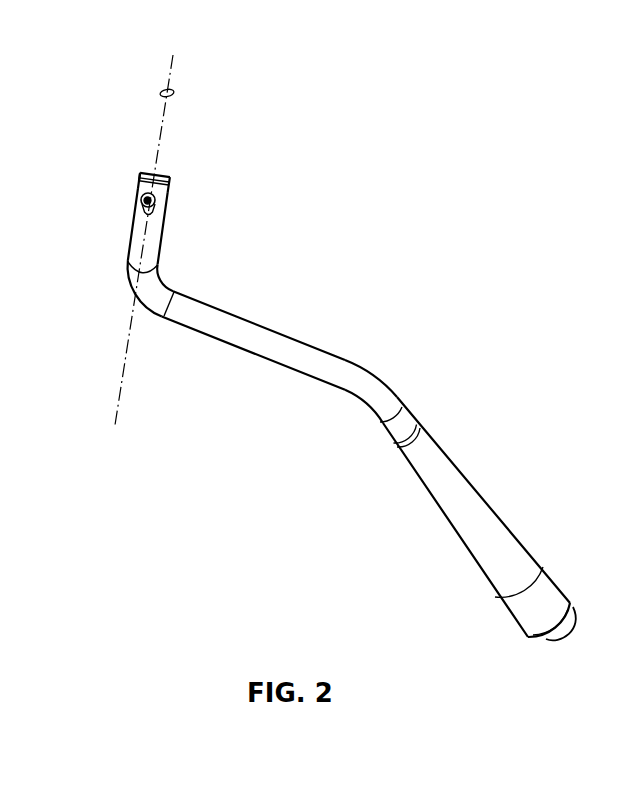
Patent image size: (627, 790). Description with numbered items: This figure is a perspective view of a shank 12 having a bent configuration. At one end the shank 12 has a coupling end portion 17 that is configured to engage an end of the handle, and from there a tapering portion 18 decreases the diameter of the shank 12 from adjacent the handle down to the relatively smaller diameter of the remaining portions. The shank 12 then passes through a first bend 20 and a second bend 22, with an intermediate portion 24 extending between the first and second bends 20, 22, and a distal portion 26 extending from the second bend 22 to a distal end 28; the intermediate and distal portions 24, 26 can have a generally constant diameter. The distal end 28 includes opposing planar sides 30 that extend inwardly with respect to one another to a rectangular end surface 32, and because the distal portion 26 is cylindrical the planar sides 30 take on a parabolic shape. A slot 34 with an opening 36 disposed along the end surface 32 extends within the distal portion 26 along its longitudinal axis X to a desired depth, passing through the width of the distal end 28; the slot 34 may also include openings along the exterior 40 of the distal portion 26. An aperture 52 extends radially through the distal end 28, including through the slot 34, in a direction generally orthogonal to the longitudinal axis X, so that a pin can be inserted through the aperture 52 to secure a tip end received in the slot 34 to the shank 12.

The shank 12 is at (502, 198).
The longitudinal axis X is at (175, 93).
The coupling end portion 17 is at (547, 640).
The tapering portion 18 is at (460, 538).
The first bend 20 is at (365, 367).
The second bend 22 is at (130, 293).
The intermediate portion 24 is at (235, 346).
The distal portion 26 is at (160, 250).
The distal end 28 is at (169, 200).
The planar sides 30 is at (140, 188).
The end surface 32 is at (148, 171).
The slot 34 is at (166, 172).
The opening 36 is at (170, 178).
The exterior 40 is at (130, 262).
The aperture 52 is at (154, 212).